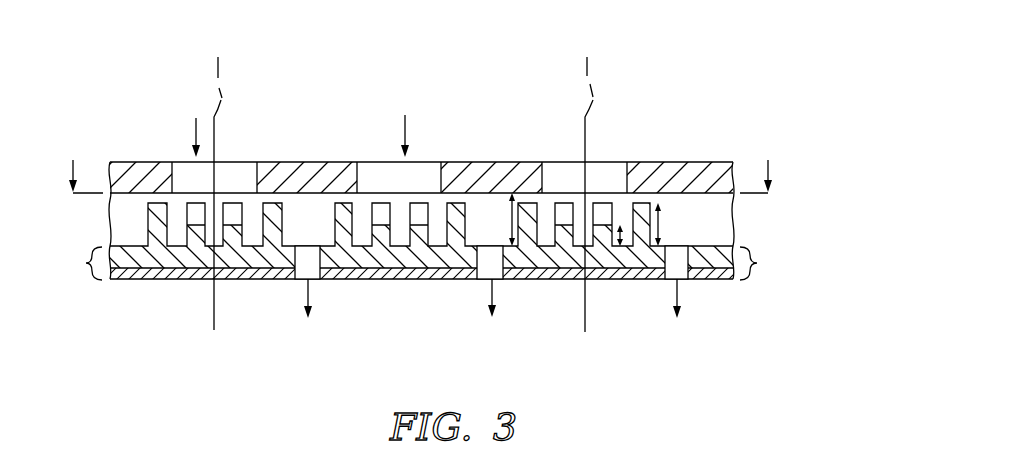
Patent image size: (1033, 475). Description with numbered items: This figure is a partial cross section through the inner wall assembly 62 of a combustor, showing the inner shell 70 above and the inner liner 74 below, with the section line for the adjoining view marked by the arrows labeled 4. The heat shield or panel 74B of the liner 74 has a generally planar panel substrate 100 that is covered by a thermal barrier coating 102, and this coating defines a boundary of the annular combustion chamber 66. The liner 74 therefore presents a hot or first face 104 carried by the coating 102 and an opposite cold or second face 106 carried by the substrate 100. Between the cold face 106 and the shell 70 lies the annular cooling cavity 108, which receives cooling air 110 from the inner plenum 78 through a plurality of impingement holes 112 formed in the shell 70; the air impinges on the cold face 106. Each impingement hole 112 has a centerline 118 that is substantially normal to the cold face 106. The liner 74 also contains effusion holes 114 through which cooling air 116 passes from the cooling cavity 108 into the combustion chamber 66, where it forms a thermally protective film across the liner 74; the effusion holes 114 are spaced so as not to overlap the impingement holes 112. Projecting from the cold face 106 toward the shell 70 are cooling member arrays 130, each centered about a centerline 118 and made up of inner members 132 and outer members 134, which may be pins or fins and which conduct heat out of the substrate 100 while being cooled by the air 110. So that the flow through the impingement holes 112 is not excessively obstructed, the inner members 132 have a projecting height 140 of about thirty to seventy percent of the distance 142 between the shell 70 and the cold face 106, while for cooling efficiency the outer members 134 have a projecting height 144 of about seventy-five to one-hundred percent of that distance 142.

The inner wall assembly 62 is at (676, 72).
The inner shell 70 is at (690, 158).
The inner plenum 78 is at (457, 60).
The annular combustion chamber 66 is at (380, 364).
The inner liner 74 is at (765, 263).
The heat shield or panel 74B is at (70, 263).
The section line 4- 4 is at (422, 164).
The panel substrate 100 is at (421, 300).
The thermal barrier coating 102 is at (421, 300).
The first face 104 is at (537, 280).
The second face 106 is at (480, 246).
The annular cooling cavity 108 is at (327, 232).
The cooling air 110 is at (196, 127).
The impingement holes 112 is at (238, 162).
The effusion holes 114 is at (297, 262).
The cooling air 116 is at (312, 280).
The centerline 118 is at (402, 180).
The cooling member arrays 130 is at (382, 187).
The inner members 132 is at (409, 226).
The outer members 134 is at (465, 218).
The projecting height 140 is at (622, 246).
The distance 142 is at (513, 250).
The projecting height 144 is at (660, 200).